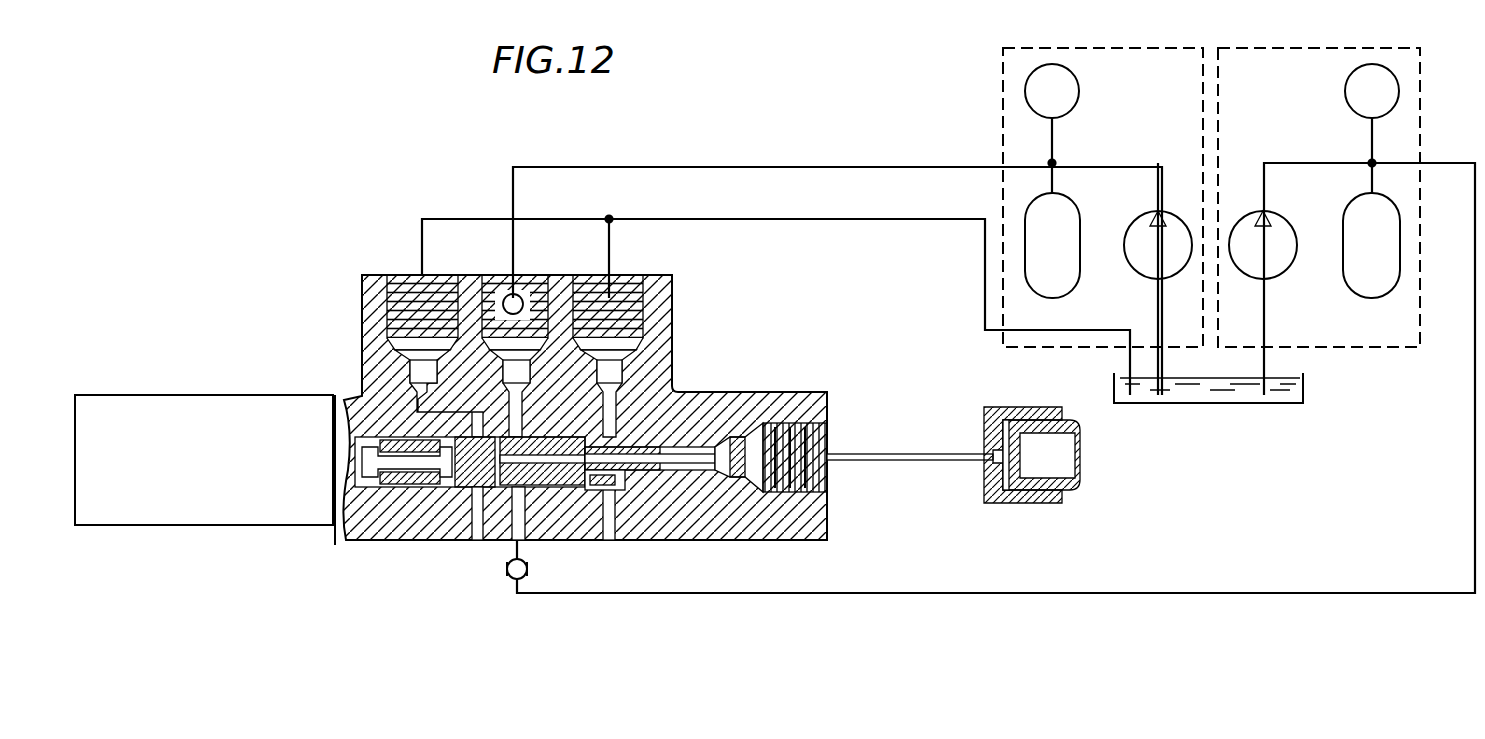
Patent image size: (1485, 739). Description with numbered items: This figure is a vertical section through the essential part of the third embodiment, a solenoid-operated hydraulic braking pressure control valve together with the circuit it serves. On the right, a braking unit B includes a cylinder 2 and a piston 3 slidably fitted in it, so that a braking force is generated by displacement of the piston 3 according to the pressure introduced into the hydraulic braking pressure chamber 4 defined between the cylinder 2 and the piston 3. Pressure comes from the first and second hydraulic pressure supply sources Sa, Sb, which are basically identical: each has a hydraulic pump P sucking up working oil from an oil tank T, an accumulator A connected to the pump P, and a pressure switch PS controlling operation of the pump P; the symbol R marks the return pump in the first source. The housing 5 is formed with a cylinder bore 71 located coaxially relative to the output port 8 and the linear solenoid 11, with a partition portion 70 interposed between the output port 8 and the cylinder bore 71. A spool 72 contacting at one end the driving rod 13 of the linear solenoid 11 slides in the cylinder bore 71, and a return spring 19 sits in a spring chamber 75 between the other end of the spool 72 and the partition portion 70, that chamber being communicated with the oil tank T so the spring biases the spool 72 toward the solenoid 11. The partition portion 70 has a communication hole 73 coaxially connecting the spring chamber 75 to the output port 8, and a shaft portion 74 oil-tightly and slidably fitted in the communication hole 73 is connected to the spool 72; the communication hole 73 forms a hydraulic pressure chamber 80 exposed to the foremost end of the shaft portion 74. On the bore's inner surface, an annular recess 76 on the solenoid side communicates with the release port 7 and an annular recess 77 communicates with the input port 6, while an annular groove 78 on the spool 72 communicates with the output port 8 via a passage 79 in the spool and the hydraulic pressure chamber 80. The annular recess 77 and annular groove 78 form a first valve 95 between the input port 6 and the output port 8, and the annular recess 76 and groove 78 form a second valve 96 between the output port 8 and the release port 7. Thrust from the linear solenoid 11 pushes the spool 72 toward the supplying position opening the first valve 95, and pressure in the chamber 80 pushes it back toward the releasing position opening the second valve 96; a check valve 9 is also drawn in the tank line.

The cylinder 2 is at (1035, 503).
The piston 3 is at (1073, 470).
The hydraulic braking pressure chamber 4 is at (992, 478).
The housing 5 is at (725, 392).
The input port 6 is at (545, 276).
The release port 7 is at (450, 275).
The output port 8 is at (822, 478).
The check valve 9 is at (499, 276).
The linear solenoid 11 is at (210, 465).
The driving rod 13 is at (340, 452).
The return spring 19 is at (620, 437).
The partition portion 70 is at (672, 390).
The cylinder bore 71 is at (530, 428).
The spool 72 is at (532, 498).
The communication hole 73 is at (705, 480).
The shaft portion 74 is at (662, 445).
The spring chamber 75 is at (628, 483).
The annular recess 76 is at (410, 436).
The annular recess 77 is at (548, 398).
The annular groove 78 is at (465, 505).
The passage 79 is at (615, 505).
The hydraulic pressure chamber 80 is at (703, 445).
The first valve 95 is at (497, 530).
The second valve 96 is at (490, 412).
The accumulator A is at (1075, 262).
The braking unit B is at (1046, 472).
The hydraulic pump P is at (1285, 222).
The pressure switch PS is at (1075, 82).
The pump R is at (1135, 222).
The first hydraulic pressure supply source Sa is at (1092, 46).
The second hydraulic pressure supply source Sb is at (1335, 46).
The oil tank T is at (1235, 403).